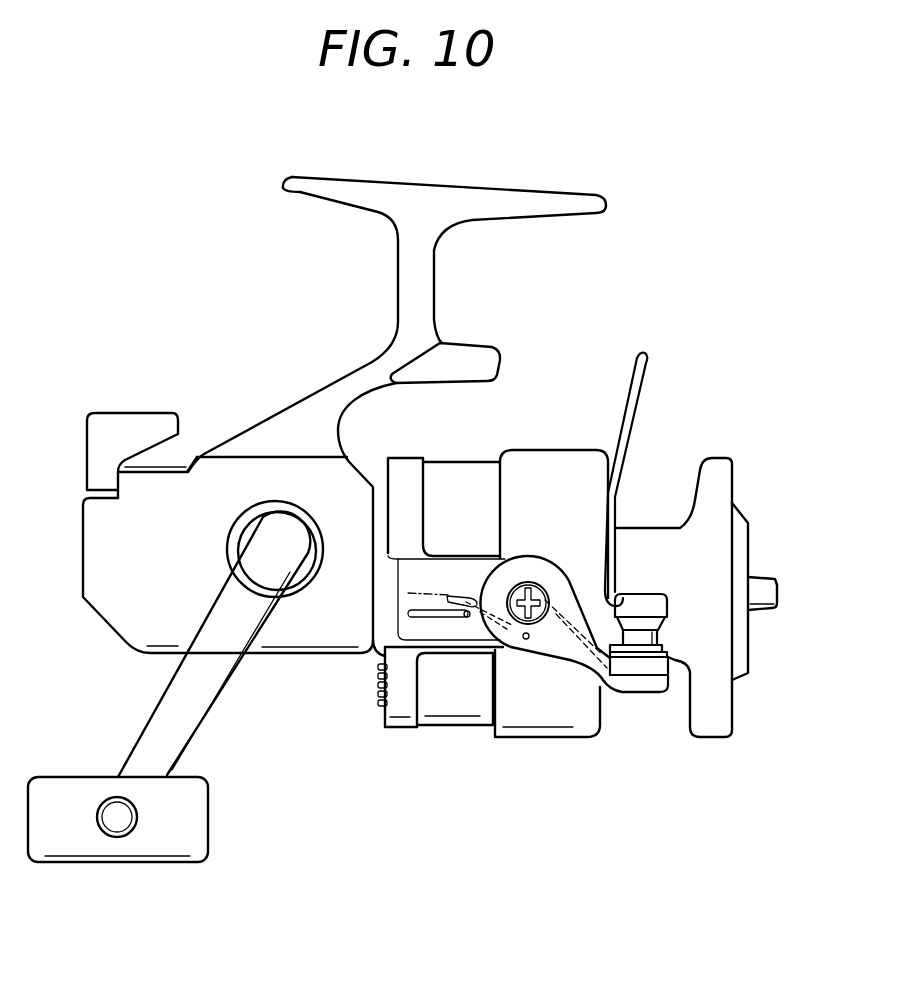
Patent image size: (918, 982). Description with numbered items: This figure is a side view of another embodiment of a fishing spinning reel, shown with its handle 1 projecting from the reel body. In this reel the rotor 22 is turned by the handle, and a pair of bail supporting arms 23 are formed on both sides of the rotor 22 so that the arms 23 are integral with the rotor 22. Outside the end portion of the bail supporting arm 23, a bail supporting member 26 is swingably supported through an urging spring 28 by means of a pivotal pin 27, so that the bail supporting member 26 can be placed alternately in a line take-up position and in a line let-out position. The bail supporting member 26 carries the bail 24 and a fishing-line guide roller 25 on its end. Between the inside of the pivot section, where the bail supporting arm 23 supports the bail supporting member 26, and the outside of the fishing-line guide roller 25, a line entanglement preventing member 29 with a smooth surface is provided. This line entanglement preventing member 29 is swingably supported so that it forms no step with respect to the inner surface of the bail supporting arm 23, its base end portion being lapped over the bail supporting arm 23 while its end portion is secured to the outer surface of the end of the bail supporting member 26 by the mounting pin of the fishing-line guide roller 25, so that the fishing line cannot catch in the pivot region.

The handle 1 is at (203, 720).
The rotor 22 is at (470, 462).
The bail supporting arm 23 is at (442, 630).
The bail 24 is at (648, 392).
The fishing-line guide roller 25 is at (656, 639).
The bail supporting member 26 is at (635, 665).
The pivotal pin 27 is at (517, 640).
The urging spring 28 is at (462, 620).
The line entanglement preventing member 29 is at (653, 685).